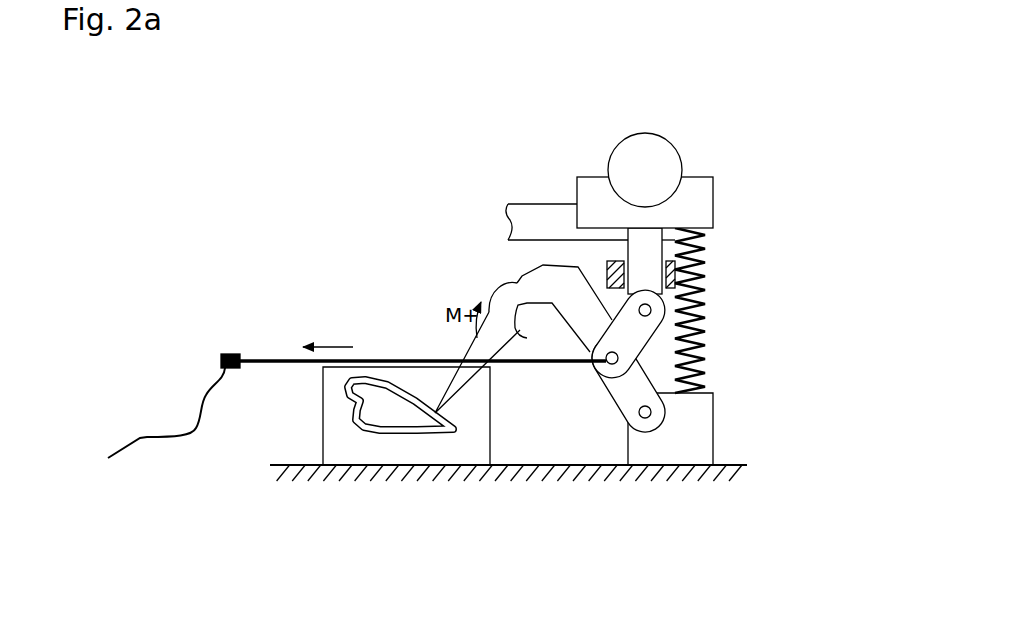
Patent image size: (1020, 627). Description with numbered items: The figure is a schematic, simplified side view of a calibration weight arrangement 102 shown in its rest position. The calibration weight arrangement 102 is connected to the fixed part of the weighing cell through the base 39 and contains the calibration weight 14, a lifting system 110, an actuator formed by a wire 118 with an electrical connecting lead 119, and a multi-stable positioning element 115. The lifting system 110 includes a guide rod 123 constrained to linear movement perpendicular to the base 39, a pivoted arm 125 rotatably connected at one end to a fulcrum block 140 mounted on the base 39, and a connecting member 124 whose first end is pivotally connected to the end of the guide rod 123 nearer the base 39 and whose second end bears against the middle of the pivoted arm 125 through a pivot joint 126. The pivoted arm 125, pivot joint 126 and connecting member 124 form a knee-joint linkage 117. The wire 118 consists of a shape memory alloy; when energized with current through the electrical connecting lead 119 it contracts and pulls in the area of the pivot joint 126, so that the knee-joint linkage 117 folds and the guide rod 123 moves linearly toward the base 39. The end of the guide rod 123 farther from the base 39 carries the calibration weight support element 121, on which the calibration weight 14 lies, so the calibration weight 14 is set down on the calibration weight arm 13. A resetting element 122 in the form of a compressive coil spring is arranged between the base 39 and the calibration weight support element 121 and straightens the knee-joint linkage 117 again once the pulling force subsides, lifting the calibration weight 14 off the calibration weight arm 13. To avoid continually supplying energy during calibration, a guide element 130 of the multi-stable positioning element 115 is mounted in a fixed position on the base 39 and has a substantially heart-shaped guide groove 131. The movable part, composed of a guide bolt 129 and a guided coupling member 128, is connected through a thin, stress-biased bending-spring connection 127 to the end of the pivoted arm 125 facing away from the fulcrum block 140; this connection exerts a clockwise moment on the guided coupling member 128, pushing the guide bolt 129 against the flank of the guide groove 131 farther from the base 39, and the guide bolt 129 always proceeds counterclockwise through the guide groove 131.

The calibration weight arrangement 102 is at (203, 172).
The lifting system 110 is at (743, 148).
The multi-stable positioning element 115 is at (308, 437).
The knee-joint linkage 117 is at (593, 395).
The wire 118 is at (327, 290).
The electrical connecting lead 119 is at (137, 381).
The calibration weight support element 121 is at (695, 218).
The resetting element 122 is at (692, 313).
The guide rod 123 is at (643, 257).
The connecting member 124 is at (628, 341).
The pivoted arm 125 is at (552, 287).
The pivot joint 126 is at (618, 360).
The bending-spring connection 127 is at (510, 305).
The guided coupling member 128 is at (473, 347).
The guide bolt 129 is at (435, 413).
The guide element 130 is at (353, 443).
The guide groove 131 is at (388, 440).
The calibration weight arm 13 is at (545, 215).
The calibration weight 14 is at (652, 161).
The base 39 is at (687, 482).
The fulcrum block 140 is at (682, 434).